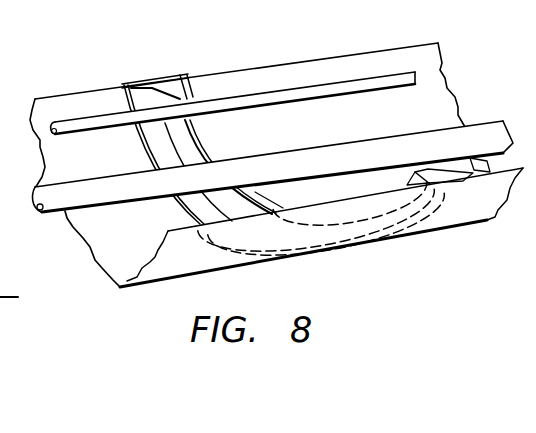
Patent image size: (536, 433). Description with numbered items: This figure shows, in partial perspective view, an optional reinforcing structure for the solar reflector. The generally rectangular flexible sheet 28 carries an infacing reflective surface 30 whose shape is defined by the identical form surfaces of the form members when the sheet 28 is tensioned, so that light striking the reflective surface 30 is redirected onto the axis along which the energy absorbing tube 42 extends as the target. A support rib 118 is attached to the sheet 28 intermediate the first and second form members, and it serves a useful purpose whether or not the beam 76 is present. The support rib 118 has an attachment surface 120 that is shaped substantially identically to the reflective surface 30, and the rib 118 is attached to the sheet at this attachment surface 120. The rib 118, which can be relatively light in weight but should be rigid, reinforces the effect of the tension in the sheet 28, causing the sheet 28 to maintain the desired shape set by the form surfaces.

The flexible sheet 28 is at (49, 90).
The reflective surface 30 is at (89, 107).
The energy absorbing tube 42 is at (303, 90).
The beam 76 is at (350, 148).
The support rib 118 is at (203, 148).
The attachment surface 120 is at (397, 226).